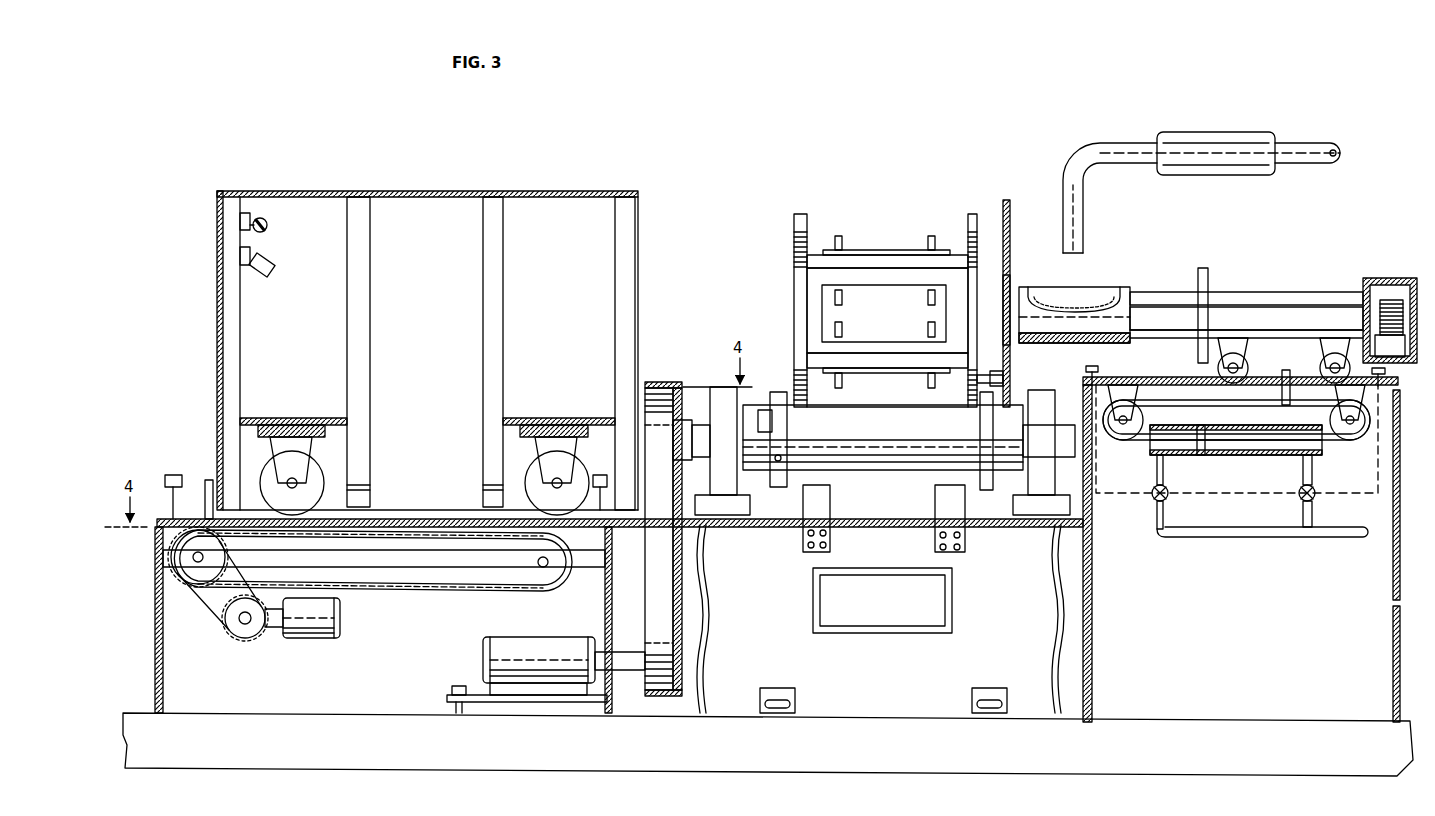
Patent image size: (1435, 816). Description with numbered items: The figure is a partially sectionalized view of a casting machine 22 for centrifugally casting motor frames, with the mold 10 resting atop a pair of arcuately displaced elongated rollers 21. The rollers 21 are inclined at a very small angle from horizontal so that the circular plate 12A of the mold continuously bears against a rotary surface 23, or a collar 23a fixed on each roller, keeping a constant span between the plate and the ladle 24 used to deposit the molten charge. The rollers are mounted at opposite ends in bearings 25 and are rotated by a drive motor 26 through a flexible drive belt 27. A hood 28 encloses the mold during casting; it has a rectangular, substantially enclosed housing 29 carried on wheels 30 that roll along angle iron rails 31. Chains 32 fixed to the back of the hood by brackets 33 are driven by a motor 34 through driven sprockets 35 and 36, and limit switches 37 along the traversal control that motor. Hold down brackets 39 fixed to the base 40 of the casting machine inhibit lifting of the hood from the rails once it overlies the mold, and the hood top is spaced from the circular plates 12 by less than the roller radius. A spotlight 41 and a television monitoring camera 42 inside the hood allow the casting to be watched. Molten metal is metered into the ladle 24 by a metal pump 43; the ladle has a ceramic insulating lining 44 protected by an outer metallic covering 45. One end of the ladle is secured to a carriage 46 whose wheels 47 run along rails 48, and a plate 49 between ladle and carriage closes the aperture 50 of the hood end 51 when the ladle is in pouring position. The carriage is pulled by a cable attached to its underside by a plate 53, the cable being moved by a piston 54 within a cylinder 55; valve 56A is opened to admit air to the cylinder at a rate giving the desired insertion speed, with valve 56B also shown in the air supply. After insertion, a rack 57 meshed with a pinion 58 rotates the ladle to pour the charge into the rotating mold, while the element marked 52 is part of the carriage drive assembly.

The mold 10 is at (894, 245).
The circular plates 12 is at (794, 240).
The circular plate 12A is at (970, 214).
The elongated rollers 21 is at (878, 434).
The casting machine 22 is at (856, 272).
The rotary surface 23 is at (986, 372).
The collar 23a is at (983, 427).
The ladle 24 is at (1081, 298).
The bearings 25 is at (721, 386).
The drive motor 26 is at (546, 624).
The flexible drive belt 27 is at (652, 610).
The hood 28 is at (447, 190).
The housing 29 is at (217, 325).
The wheels 30 is at (312, 480).
The angle iron rails 31 is at (440, 510).
The chains 32 is at (446, 592).
The brackets 33 is at (205, 480).
The motor 34 is at (305, 637).
The driven sprocket 35 is at (236, 626).
The driven sprocket 36 is at (184, 584).
The limit switches 37 is at (178, 472).
The hold down brackets 39 is at (800, 540).
The base 40 is at (878, 681).
The spotlight 41 is at (268, 224).
The television monitoring camera 42 is at (274, 262).
The metal pump 43 is at (1227, 136).
The insulating lining 44 is at (1068, 297).
The outer metallic covering 45 is at (1100, 306).
The carriage 46 is at (1282, 282).
The wheels 47 is at (1247, 364).
The rails 48 is at (1172, 378).
The plate 49 is at (1204, 268).
The aperture 50 is at (1010, 282).
The hood end 51 is at (1006, 200).
The belt 52 is at (1218, 410).
The plate 53 is at (1290, 406).
The piston 54 is at (1201, 454).
The cylinder 55 is at (1250, 454).
The valve 56A is at (1168, 494).
The valve 56B is at (1300, 494).
The rack 57 is at (1390, 360).
The pinion 58 is at (1392, 300).